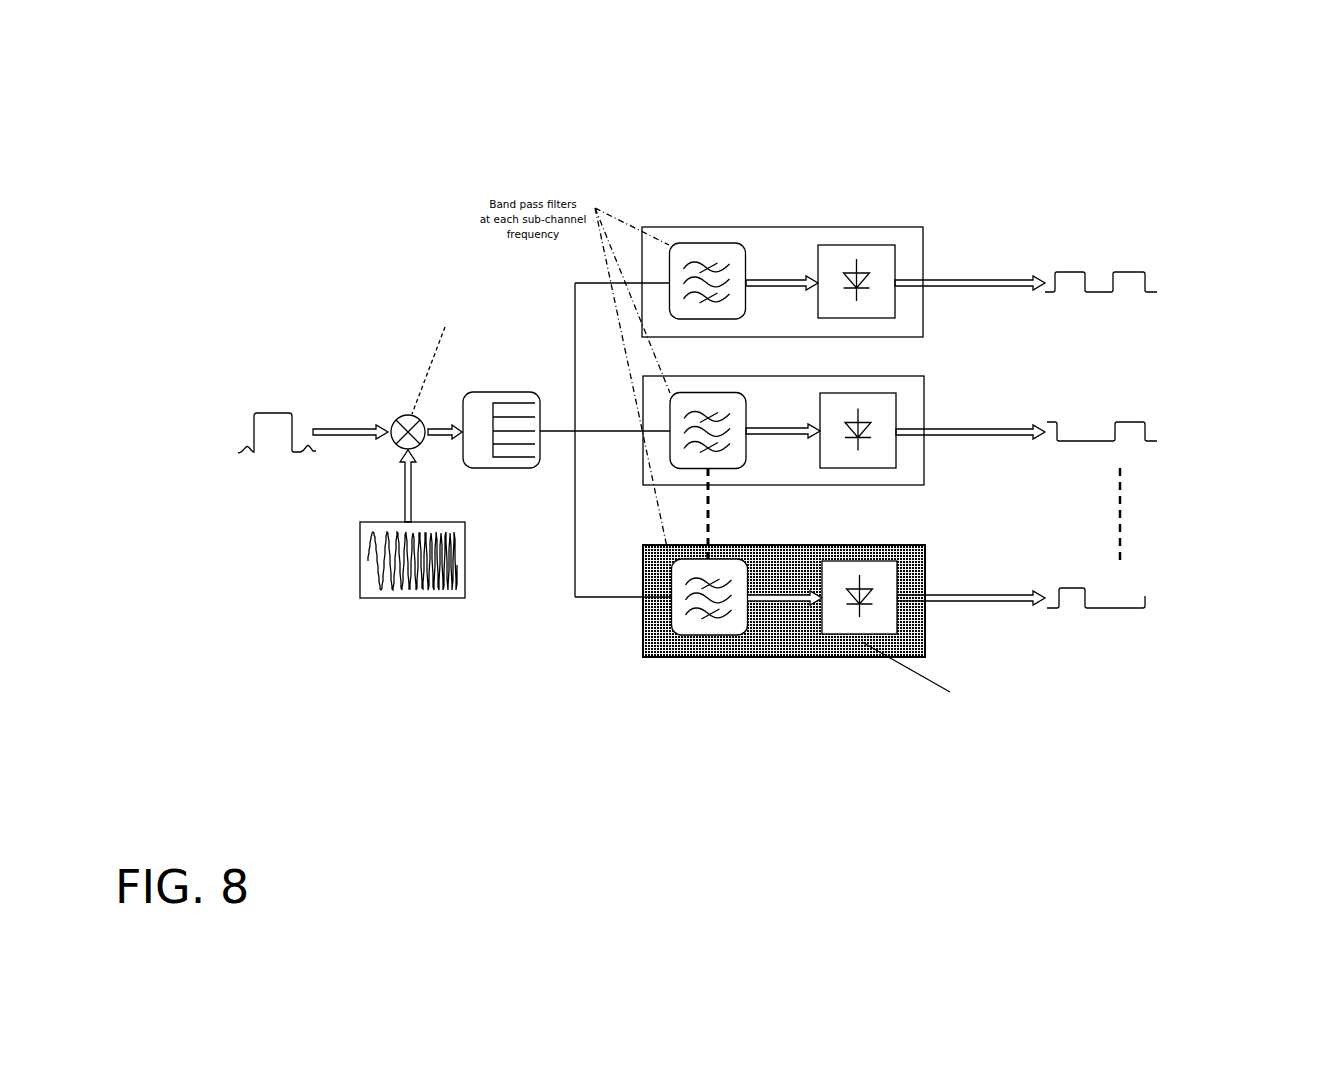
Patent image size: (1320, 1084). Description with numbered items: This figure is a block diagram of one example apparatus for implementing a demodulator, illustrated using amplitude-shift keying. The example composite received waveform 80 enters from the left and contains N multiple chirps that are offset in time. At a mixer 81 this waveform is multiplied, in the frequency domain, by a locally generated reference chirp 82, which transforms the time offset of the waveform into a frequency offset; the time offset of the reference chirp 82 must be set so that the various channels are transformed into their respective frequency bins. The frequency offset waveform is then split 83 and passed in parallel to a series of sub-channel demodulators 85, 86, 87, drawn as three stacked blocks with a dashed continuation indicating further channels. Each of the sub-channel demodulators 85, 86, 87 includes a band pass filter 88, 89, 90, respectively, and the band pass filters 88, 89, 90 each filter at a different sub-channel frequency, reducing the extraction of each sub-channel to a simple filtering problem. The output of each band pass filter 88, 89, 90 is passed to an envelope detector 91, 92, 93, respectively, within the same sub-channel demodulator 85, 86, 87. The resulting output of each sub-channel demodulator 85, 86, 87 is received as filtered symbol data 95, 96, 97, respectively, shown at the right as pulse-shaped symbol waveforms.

The composite received waveform 80 is at (267, 466).
The mixer 81 is at (397, 416).
The reference chirp 82 is at (360, 560).
The split 83 is at (502, 470).
The sub-channel demodulator 85 is at (843, 228).
The sub-channel demodulator 86 is at (787, 396).
The sub-channel demodulator 87 is at (875, 648).
The band pass filter 88 is at (707, 245).
The band pass filter 89 is at (670, 420).
The band pass filter 90 is at (702, 633).
The envelope detector 91 is at (858, 245).
The envelope detector 92 is at (865, 438).
The envelope detector 93 is at (897, 617).
The filtered symbol data 95 is at (1142, 250).
The filtered symbol data 96 is at (1157, 407).
The filtered symbol data 97 is at (1157, 560).